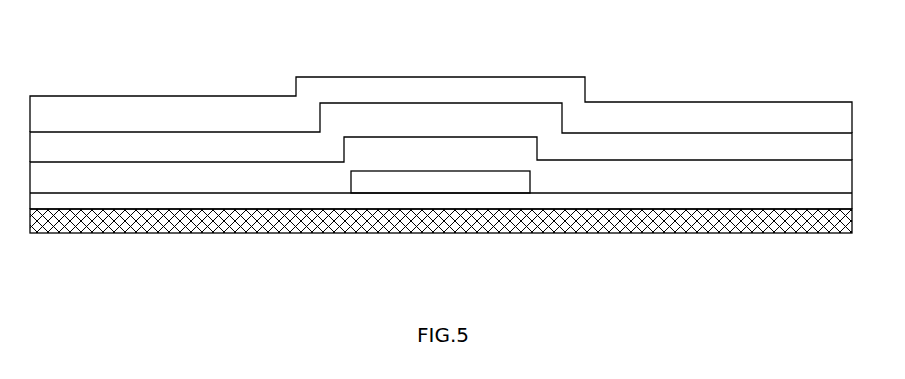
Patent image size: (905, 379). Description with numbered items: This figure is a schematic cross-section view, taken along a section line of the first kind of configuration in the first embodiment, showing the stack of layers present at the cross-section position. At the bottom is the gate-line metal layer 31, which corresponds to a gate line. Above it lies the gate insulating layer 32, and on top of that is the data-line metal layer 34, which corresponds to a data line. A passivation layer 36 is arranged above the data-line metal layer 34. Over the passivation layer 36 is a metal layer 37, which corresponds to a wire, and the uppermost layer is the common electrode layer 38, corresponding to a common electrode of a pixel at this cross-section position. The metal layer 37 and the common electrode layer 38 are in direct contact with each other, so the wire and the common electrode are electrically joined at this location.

The gate-line metal layer 31 is at (445, 220).
The gate insulating layer 32 is at (522, 200).
The data-line metal layer 34 is at (532, 178).
The passivation layer 36 is at (712, 180).
The metal layer 37 is at (657, 147).
The common electrode layer 38 is at (592, 110).